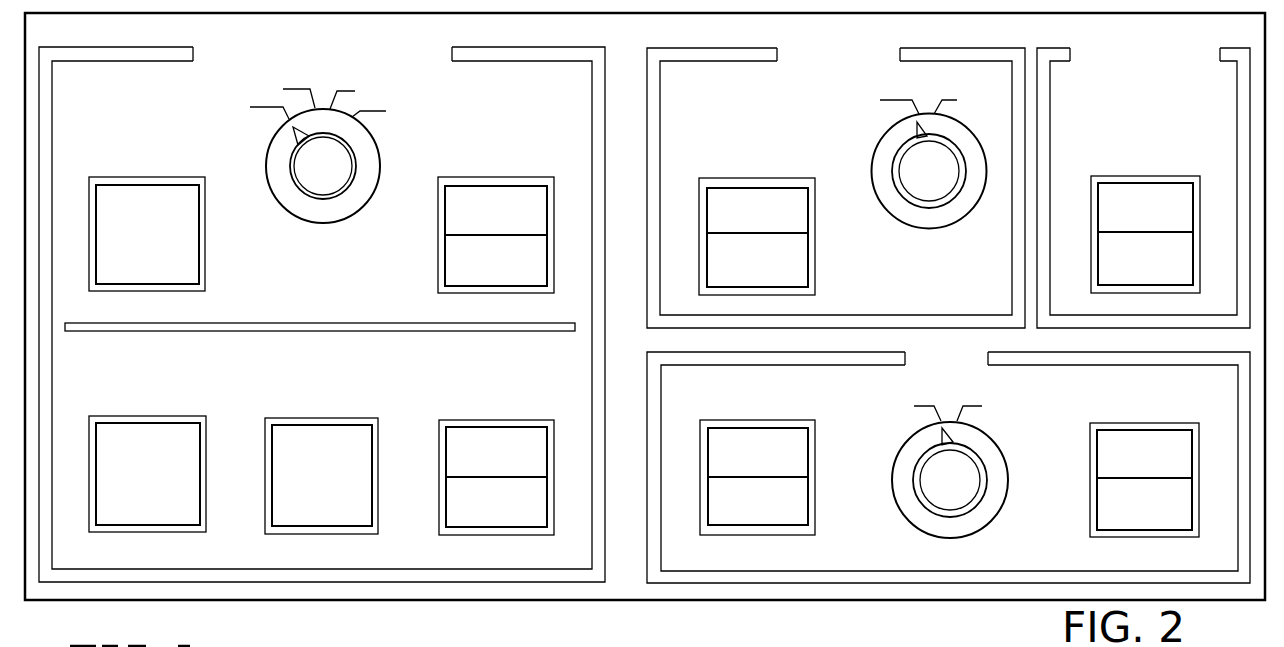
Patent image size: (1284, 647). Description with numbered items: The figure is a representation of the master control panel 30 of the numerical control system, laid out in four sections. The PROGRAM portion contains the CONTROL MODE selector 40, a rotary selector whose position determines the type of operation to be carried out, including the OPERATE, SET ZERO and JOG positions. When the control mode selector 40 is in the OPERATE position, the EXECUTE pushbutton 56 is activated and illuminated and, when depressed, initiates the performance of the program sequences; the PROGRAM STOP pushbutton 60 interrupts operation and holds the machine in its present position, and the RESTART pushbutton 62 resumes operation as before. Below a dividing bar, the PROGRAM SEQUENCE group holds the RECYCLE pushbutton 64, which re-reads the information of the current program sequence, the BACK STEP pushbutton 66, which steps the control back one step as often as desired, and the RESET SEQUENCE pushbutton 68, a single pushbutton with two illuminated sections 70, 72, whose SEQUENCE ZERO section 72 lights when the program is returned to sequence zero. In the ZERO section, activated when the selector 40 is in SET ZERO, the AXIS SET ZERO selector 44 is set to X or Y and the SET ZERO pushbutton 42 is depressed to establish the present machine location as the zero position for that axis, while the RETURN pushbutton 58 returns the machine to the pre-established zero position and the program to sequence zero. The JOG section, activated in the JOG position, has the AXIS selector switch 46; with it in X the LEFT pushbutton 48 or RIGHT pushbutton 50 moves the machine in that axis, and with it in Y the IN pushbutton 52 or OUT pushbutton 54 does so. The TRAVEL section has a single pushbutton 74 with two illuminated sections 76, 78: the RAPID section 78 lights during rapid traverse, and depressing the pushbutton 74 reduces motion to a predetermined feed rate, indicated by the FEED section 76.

The master control panel 30 is at (632, 43).
The control mode selector 40 is at (378, 152).
The SET ZERO pushbutton 42 is at (814, 268).
The AXIS SET ZERO selector 44 is at (873, 161).
The AXIS selector switch 46 is at (1002, 460).
The LEFT pushbutton 48 is at (773, 428).
The RIGHT pushbutton 50 is at (1162, 440).
The IN pushbutton 52 is at (1100, 513).
The OUT pushbutton 54 is at (800, 518).
The EXECUTE pushbutton 56 is at (185, 269).
The RETURN pushbutton 58 is at (722, 193).
The PROGRAM STOP pushbutton 60 is at (452, 218).
The RESTART pushbutton 62 is at (455, 247).
The RECYCLE pushbutton 64 is at (207, 460).
The BACK STEP pushbutton 66 is at (378, 447).
The RESET SEQUENCE pushbutton 68 is at (505, 420).
The illuminated section 70 is at (536, 455).
The SEQUENCE 0 section 72 is at (548, 509).
The pushbutton 74 is at (1134, 181).
The FEED section 76 is at (1106, 215).
The RAPID section 78 is at (1107, 267).